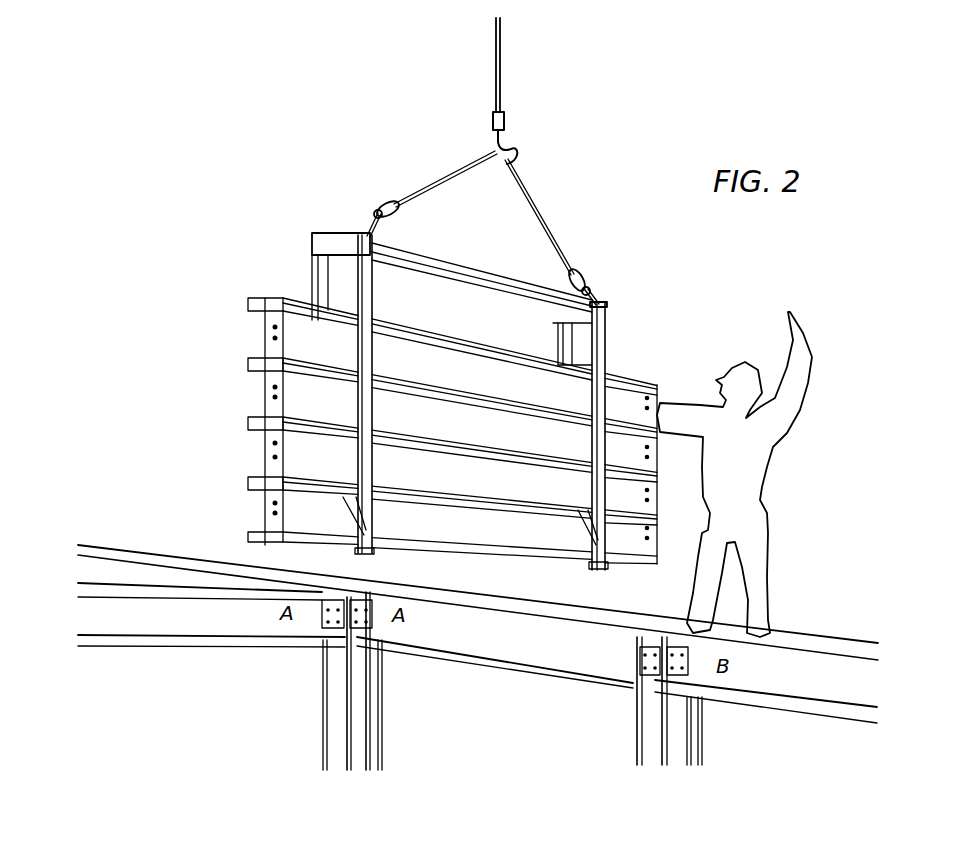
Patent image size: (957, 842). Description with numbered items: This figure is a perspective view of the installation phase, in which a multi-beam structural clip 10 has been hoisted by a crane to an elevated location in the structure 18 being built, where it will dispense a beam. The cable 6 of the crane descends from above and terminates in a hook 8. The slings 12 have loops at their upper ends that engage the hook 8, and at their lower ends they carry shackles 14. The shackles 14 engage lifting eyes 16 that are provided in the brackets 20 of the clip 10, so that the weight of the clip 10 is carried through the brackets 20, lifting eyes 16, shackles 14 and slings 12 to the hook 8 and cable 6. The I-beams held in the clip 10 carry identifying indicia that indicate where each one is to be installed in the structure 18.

The cable 6 is at (501, 62).
The hook 8 is at (504, 120).
The multi-beam structural clip 10 is at (627, 330).
The slings 12 is at (528, 203).
The shackles 14 is at (385, 204).
The lifting eyes 16 is at (378, 208).
The structure 18 is at (545, 608).
The brackets 20 is at (347, 228).